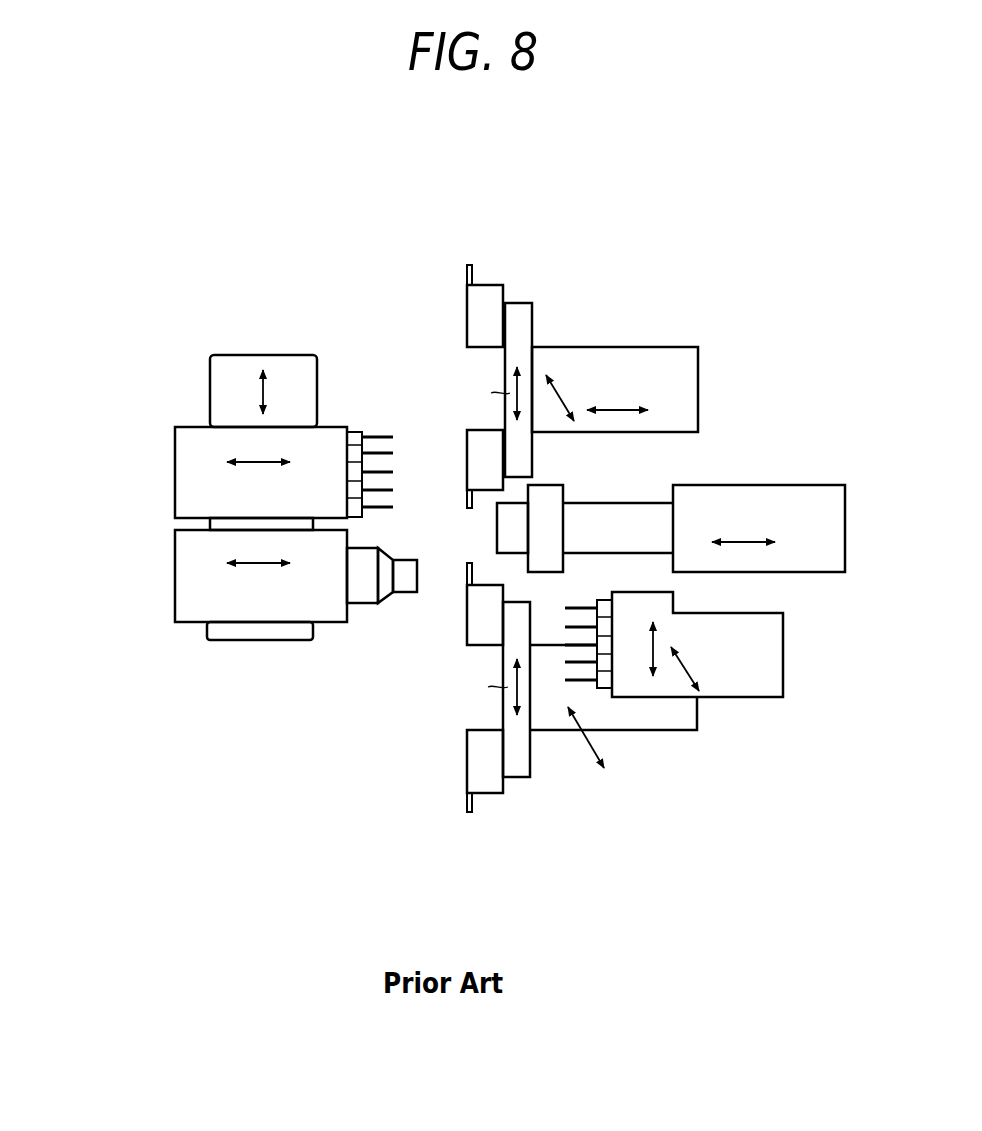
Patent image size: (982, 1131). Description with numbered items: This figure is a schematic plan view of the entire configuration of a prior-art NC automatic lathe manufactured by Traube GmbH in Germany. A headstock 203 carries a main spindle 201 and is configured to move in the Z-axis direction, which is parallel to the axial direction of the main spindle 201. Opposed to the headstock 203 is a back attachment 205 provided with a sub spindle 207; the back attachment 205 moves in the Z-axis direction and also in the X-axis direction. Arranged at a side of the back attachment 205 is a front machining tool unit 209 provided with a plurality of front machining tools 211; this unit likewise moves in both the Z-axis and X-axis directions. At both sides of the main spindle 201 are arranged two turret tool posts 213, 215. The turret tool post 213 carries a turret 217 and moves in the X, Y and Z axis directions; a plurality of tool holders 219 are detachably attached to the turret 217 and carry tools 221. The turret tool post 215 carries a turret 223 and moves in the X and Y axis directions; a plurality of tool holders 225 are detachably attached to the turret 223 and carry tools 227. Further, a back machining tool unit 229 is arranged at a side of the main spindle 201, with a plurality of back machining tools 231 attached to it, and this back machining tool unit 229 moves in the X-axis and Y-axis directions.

The main spindle 201 is at (540, 510).
The headstock 203 is at (773, 500).
The back attachment 205 is at (252, 612).
The sub spindle 207 is at (399, 585).
The front machining tool unit 209 is at (177, 477).
The front machining tools 211 is at (383, 437).
The turret tool post 213 is at (640, 347).
The turret tool post 215 is at (647, 733).
The turret 217 is at (520, 313).
The tool holders 219 is at (467, 317).
The tools 221 is at (473, 265).
The turret 223 is at (515, 777).
The tool holders 225 is at (468, 767).
The tools 227 is at (467, 812).
The back machining tool unit 229 is at (752, 700).
The back machining tools 231 is at (575, 605).